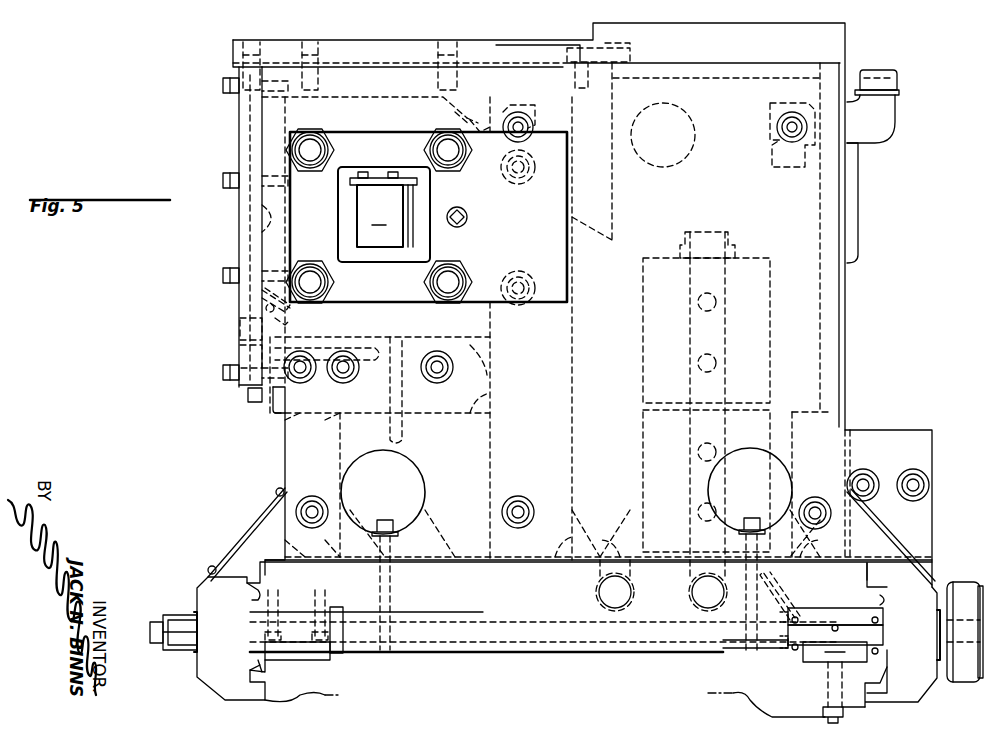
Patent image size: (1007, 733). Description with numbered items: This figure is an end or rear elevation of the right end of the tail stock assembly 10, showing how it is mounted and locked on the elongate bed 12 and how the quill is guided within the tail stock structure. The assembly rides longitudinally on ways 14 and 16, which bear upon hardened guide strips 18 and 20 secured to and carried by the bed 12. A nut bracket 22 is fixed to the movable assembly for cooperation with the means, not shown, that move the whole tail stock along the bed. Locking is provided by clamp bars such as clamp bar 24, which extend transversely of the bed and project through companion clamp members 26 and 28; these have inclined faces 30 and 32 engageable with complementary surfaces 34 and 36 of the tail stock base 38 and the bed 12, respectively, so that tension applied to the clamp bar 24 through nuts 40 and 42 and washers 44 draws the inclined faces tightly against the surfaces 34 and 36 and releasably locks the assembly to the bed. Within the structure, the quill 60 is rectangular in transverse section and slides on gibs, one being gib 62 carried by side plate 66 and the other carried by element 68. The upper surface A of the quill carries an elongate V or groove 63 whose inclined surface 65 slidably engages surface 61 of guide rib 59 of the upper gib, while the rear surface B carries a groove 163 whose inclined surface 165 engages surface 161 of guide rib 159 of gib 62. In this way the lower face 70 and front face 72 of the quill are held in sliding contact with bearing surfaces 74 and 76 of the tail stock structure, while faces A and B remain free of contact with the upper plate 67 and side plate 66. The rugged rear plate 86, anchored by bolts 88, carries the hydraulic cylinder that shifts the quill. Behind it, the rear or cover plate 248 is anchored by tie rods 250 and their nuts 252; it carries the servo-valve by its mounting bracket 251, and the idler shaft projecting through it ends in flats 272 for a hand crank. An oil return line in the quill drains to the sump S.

The tail stock assembly 10 is at (180, 307).
The bed 12 is at (312, 690).
The way 14 is at (338, 610).
The way 16 is at (812, 615).
The hardened guide strip 18 is at (318, 655).
The hardened guide strip 20 is at (805, 648).
The nut bracket 22 is at (930, 458).
The clamp bar 24 is at (512, 640).
The clamp member 26 is at (220, 680).
The clamp member 28 is at (918, 690).
The inclined face 30 is at (258, 590).
The inclined face 32 is at (265, 678).
The complementary surface 34 is at (258, 593).
The complementary surface 36 is at (262, 676).
The tail stock base 38 is at (530, 610).
The nut 40 is at (178, 618).
The nut 42 is at (962, 588).
The washers 44 is at (195, 650).
The guide rib 59 is at (472, 118).
The quill 60 is at (260, 122).
The surface 61 is at (500, 50).
The gib 62 is at (255, 337).
The V or groove 63 is at (462, 118).
The inclined surface 65 is at (470, 127).
The side plate 66 is at (250, 242).
The upper plate 67 is at (338, 48).
The element 68 is at (457, 80).
The lower face 70 is at (418, 338).
The front face 72 is at (500, 184).
The bearing surface 74 is at (457, 336).
The bearing surface 76 is at (496, 240).
The rear plate 86 is at (296, 460).
The bolts 88 is at (343, 378).
The guide rib 159 is at (262, 292).
The surface 161 is at (265, 306).
The V or groove 163 is at (290, 312).
The inclined surface 165 is at (287, 325).
The rear or cover plate 248 is at (300, 200).
The tie rods 250 is at (440, 140).
The mounting bracket 251 is at (418, 172).
The nuts 252 is at (435, 150).
The flats 272 is at (467, 215).
The upper surface A is at (378, 97).
The rear surface B is at (262, 218).
The sump S is at (845, 368).